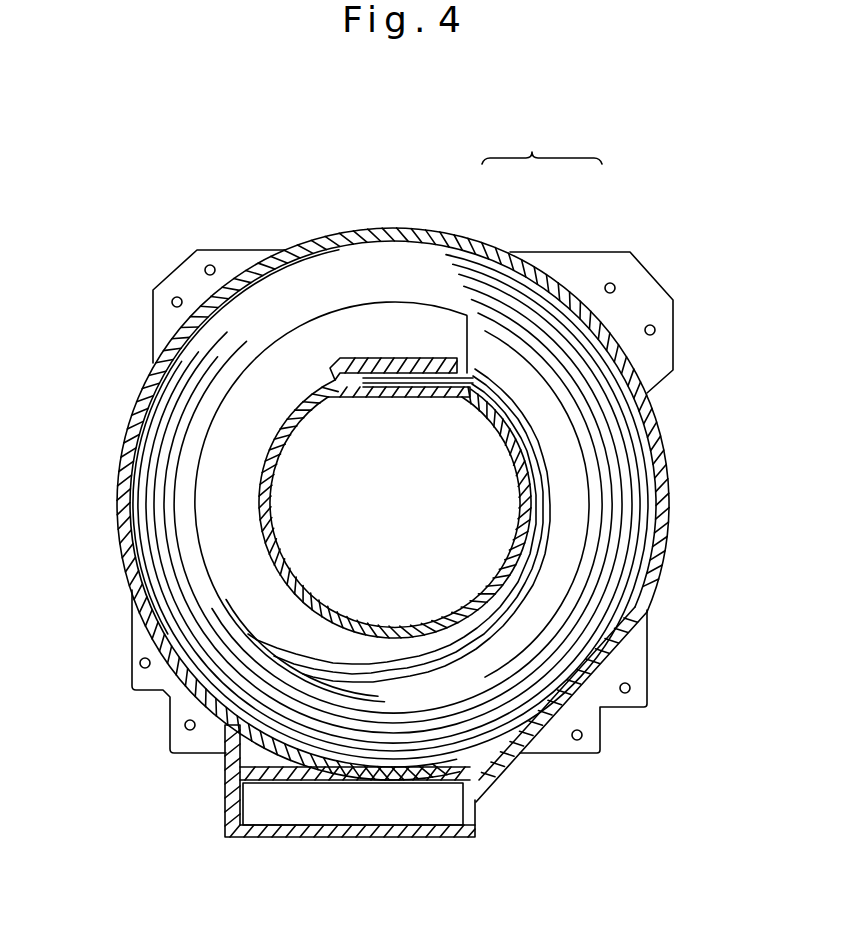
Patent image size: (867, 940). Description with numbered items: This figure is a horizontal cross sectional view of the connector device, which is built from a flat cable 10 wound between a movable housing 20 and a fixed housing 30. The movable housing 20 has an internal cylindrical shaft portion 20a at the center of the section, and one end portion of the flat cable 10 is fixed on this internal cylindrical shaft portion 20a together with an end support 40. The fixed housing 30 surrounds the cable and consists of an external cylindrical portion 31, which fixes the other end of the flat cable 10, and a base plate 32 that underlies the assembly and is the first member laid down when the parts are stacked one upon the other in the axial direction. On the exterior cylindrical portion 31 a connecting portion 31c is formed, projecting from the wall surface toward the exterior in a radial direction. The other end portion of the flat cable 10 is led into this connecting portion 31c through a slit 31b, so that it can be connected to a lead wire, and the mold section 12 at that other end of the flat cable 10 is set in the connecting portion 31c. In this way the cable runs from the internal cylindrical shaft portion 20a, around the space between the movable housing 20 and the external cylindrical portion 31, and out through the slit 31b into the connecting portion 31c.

The flat cable 10 is at (152, 526).
The mold section 12 is at (273, 806).
The movable housing 20 is at (284, 449).
The internal cylindrical shaft portion 20a is at (281, 566).
The fixed housing 30 is at (542, 145).
The external cylindrical portion 31 is at (479, 234).
The slit 31b is at (493, 760).
The connecting portion 31c is at (350, 830).
The base plate 32 is at (574, 243).
The end support 40 is at (567, 515).